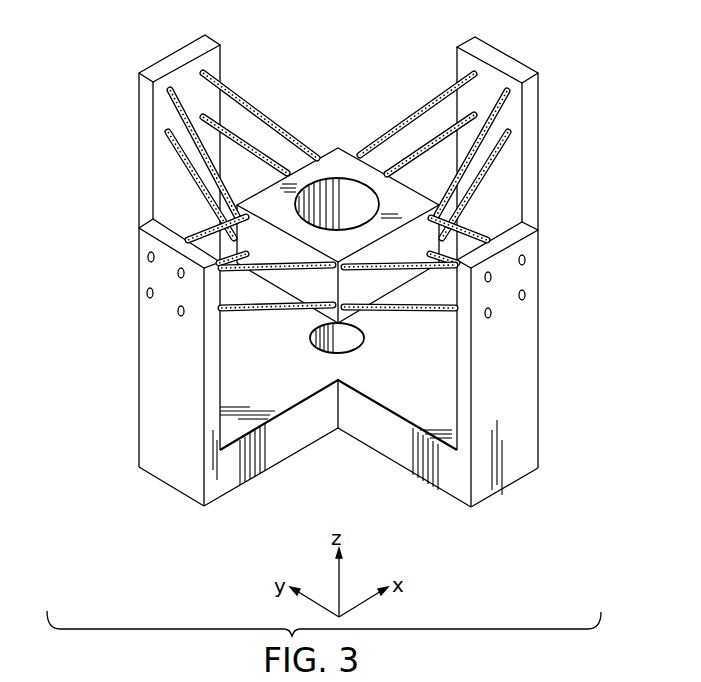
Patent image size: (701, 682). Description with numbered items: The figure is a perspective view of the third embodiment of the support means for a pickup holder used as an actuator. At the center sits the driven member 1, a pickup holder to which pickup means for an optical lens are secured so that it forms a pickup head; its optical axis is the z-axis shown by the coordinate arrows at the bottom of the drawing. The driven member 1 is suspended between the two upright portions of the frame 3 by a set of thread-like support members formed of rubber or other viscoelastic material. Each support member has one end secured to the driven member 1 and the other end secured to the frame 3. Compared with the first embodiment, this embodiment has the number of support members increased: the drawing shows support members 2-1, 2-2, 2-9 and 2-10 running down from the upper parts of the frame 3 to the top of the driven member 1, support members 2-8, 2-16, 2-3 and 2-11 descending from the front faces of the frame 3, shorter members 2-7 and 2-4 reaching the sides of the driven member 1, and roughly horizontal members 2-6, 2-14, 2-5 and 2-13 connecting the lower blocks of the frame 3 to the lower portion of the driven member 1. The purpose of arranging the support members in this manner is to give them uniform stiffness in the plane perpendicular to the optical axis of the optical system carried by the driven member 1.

The driven member 1 is at (342, 155).
The frame 3 is at (181, 53).
The support member 2-1 is at (284, 123).
The support member 2-2 is at (435, 100).
The support member 2-3 is at (497, 88).
The support member 2-4 is at (470, 238).
The support member 2-5 is at (373, 271).
The support member 2-6 is at (253, 270).
The support member 2-7 is at (203, 232).
The support member 2-8 is at (172, 104).
The support member 2-9 is at (229, 130).
The support member 2-10 is at (418, 147).
The support member 2-11 is at (490, 165).
The support member 2-13 is at (415, 313).
The support member 2-14 is at (245, 312).
The support member 2-16 is at (177, 150).